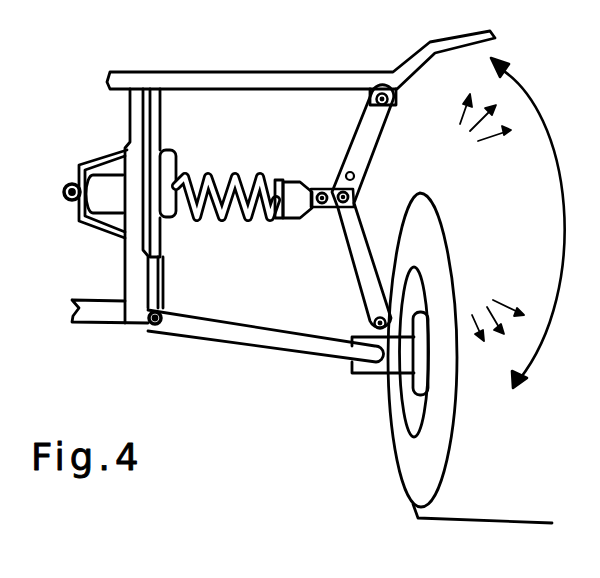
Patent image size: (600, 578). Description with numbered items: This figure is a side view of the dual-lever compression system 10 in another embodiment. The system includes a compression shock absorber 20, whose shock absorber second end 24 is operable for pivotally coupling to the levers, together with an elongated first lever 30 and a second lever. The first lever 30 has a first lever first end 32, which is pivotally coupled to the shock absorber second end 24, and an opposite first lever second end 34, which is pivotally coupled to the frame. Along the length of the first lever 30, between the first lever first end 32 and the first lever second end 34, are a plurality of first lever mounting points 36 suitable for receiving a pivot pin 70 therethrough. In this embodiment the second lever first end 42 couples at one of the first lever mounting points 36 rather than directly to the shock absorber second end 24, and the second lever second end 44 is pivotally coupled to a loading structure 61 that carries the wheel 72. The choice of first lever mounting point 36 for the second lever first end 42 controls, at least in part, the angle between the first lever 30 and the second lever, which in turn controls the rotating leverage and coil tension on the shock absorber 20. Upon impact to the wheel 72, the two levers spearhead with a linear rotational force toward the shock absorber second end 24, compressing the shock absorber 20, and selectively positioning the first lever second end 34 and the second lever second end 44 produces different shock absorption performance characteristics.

The dual-lever compression system 10 is at (266, 254).
The compression shock absorber 20 is at (171, 165).
The shock absorber second end 24 is at (297, 178).
The first lever 30 is at (377, 139).
The first lever first end 32 is at (333, 209).
The first lever second end 34 is at (390, 102).
The first lever mounting points 36 is at (318, 191).
The second lever first end 42 is at (553, 197).
The second lever second end 44 is at (370, 313).
The loading structure 61 is at (274, 350).
The pivot pin 70 is at (319, 207).
The wheel 72 is at (435, 518).